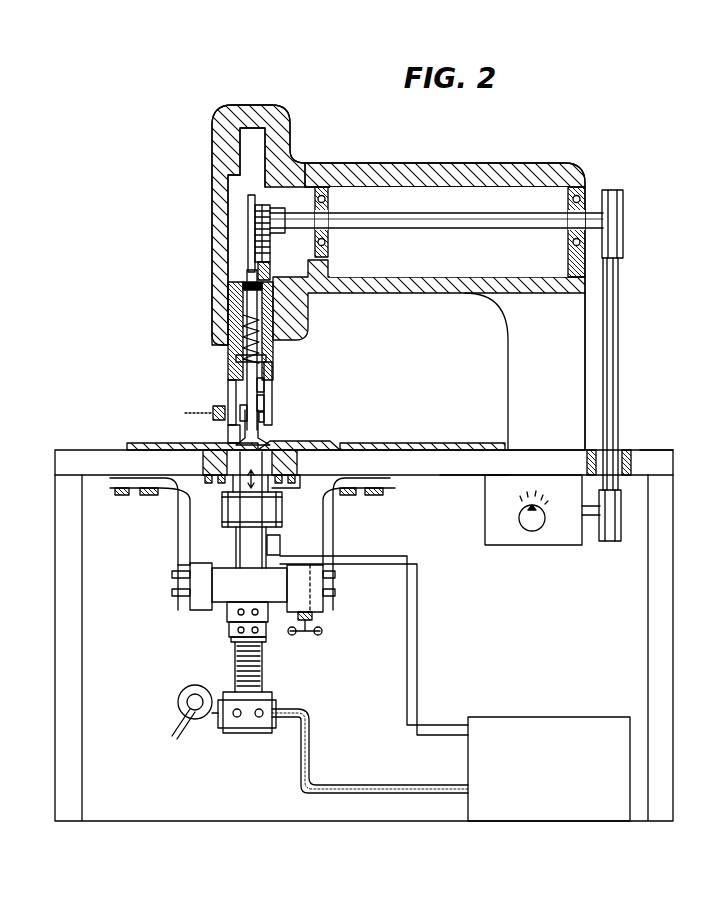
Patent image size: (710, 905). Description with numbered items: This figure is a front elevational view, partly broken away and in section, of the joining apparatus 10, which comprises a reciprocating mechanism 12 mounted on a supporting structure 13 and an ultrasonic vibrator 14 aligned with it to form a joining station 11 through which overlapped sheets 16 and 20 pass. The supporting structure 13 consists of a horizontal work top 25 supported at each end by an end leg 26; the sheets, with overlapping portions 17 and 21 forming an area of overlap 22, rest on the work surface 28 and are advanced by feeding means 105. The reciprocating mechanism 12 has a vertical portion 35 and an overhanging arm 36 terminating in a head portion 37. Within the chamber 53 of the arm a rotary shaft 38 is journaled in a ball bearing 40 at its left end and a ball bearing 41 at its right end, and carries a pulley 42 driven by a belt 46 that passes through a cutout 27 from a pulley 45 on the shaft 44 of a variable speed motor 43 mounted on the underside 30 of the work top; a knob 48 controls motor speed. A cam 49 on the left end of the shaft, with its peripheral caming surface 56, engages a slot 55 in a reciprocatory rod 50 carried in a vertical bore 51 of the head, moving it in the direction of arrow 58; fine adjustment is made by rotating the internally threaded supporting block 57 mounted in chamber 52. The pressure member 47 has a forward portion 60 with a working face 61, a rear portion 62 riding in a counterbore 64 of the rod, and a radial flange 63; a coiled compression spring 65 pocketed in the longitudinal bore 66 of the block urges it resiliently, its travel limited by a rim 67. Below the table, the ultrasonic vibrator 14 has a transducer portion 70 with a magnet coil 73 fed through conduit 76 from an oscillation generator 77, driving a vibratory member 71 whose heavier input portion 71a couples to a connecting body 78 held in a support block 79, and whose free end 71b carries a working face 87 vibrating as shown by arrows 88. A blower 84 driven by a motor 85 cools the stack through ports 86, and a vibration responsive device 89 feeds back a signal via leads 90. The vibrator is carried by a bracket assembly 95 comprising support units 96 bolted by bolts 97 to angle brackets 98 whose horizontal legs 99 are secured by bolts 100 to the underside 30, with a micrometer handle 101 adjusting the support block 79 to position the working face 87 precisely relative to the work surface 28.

The joining apparatus 10 is at (206, 129).
The joining station 11 is at (260, 438).
The reciprocating mechanism 12 is at (446, 165).
The supporting structure 13 is at (680, 476).
The ultrasonic vibrator 14 is at (266, 644).
The sheet of thermoplastic material 16 is at (426, 446).
The overlapping portion 17 is at (300, 445).
The sheet of thermoplastic material 20 is at (132, 445).
The overlapping portion 21 is at (298, 462).
The area of overlap 22 is at (205, 463).
The work top 25 is at (660, 457).
The end leg 26 is at (56, 660).
The cutout 27 is at (626, 452).
The work surface 28 is at (500, 448).
The underside 30 is at (466, 478).
The vertical portion 35 is at (520, 378).
The overhanging arm 36 is at (418, 292).
The head portion 37 is at (212, 190).
The rotary shaft 38 is at (465, 224).
The ball bearing 40 is at (372, 166).
The ball bearing 41 is at (586, 190).
The pulley 42 is at (624, 240).
The variable speed motor 43 is at (556, 548).
The motor shaft 44 is at (596, 510).
The pulley 45 is at (606, 543).
The belt 46 is at (620, 323).
The pressure member 47 is at (266, 387).
The knob 48 is at (530, 524).
The cam 49 is at (308, 222).
The reciprocatory rod 50 is at (240, 172).
The vertical bore 51 is at (262, 128).
The chamber 52 is at (270, 274).
The chamber 53 is at (403, 253).
The slot 55 is at (288, 203).
The peripheral caming surface 56 is at (262, 227).
The supporting block 57 is at (273, 368).
The arrow 58 is at (263, 419).
The forward portion 60 is at (265, 405).
The working face 61 is at (236, 443).
The rear portion 62 is at (232, 302).
The radial flange 63 is at (238, 358).
The counterbore 64 is at (248, 282).
The coiled compression spring 65 is at (244, 332).
The longitudinal bore 66 is at (268, 318).
The rim 67 is at (230, 383).
The transducer portion 70 is at (234, 672).
The vibratory member 71 is at (226, 514).
The input end portion 71a is at (227, 528).
The free end 71b is at (234, 481).
The magnet coil 73 is at (263, 674).
The conduit 76 is at (365, 786).
The oscillation generator 77 is at (556, 716).
The connecting body 78 is at (240, 568).
The support block 79 is at (228, 610).
The blower 84 is at (183, 696).
The motor 85 is at (188, 705).
The ports 86 is at (236, 630).
The working face 87 is at (288, 488).
The arrows 88 is at (252, 509).
The vibration responsive device 89 is at (281, 546).
The leads 90 is at (418, 672).
The bracket assembly 95 is at (177, 557).
The support units 96 is at (193, 600).
The bolts 97 is at (172, 592).
The angle brackets 98 is at (180, 545).
The horizontal legs 99 is at (120, 496).
The bolts 100 is at (150, 496).
The micrometer handle 101 is at (321, 632).
The feeding means 105 is at (212, 412).